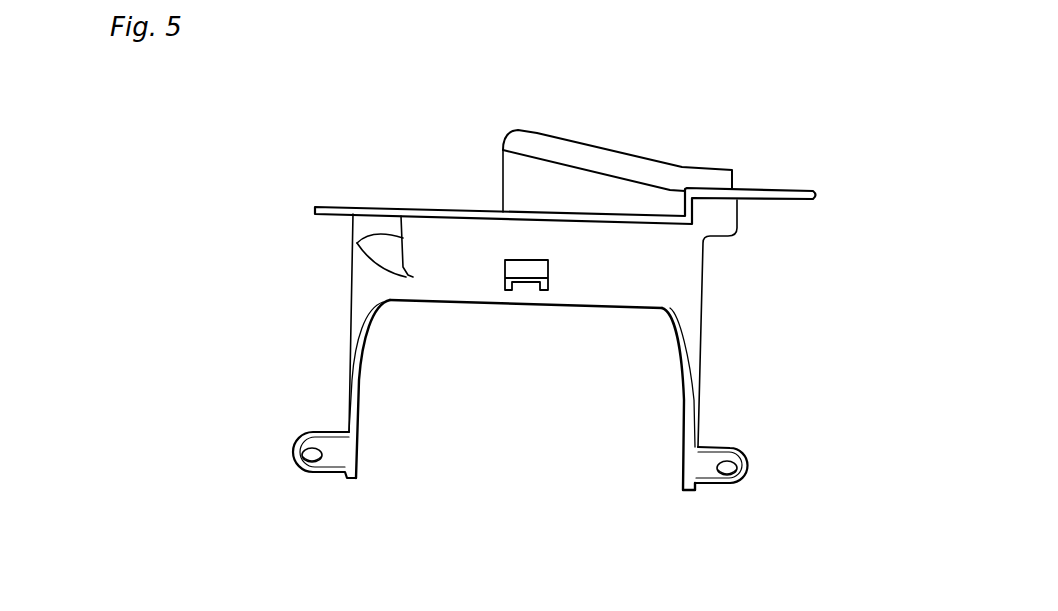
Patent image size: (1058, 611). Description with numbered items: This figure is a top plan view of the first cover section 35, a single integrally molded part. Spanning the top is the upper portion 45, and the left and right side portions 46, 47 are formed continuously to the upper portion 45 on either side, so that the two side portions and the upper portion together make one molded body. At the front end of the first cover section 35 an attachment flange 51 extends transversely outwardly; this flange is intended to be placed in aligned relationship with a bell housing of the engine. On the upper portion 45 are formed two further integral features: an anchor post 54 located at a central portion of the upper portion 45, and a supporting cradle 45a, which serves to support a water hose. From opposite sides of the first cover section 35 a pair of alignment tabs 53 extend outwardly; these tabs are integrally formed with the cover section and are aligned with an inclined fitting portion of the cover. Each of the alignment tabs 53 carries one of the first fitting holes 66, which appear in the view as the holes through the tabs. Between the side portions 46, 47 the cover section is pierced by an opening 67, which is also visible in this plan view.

The first cover section 35 is at (376, 166).
The upper portion 45 is at (468, 246).
The supporting cradle 45a is at (637, 157).
The attachment flange 51 is at (593, 217).
The anchor post 54 is at (527, 260).
The left side portion 46 is at (358, 297).
The right side portion 47 is at (690, 308).
The opening 67 is at (604, 308).
The alignment tabs 53 is at (320, 430).
The first fitting holes 66 is at (322, 458).